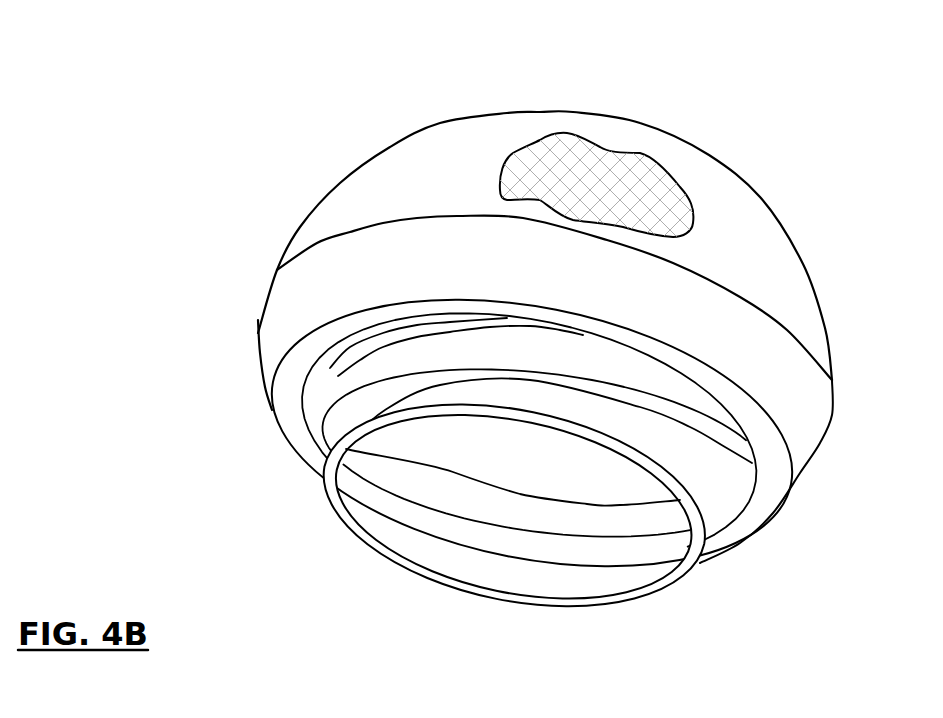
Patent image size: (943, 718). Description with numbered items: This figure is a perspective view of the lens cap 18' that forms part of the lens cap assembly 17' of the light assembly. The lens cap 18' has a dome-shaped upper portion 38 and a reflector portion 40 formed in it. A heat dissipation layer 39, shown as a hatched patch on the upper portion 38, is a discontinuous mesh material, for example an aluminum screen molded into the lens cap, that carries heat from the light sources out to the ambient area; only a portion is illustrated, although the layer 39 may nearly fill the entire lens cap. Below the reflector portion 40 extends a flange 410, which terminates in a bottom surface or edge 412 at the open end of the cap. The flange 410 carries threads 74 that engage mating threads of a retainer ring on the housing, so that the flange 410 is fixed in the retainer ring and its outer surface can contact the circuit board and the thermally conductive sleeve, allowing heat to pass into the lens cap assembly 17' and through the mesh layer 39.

The lens cap assembly 17' is at (545, 218).
The lens cap 18' is at (554, 249).
The upper portion 38 is at (802, 266).
The heat dissipation layer 39 is at (614, 157).
The threads 74 is at (326, 364).
The reflector portion 40 is at (597, 518).
The flange 410 is at (727, 463).
The bottom surface or edge 412 is at (488, 594).